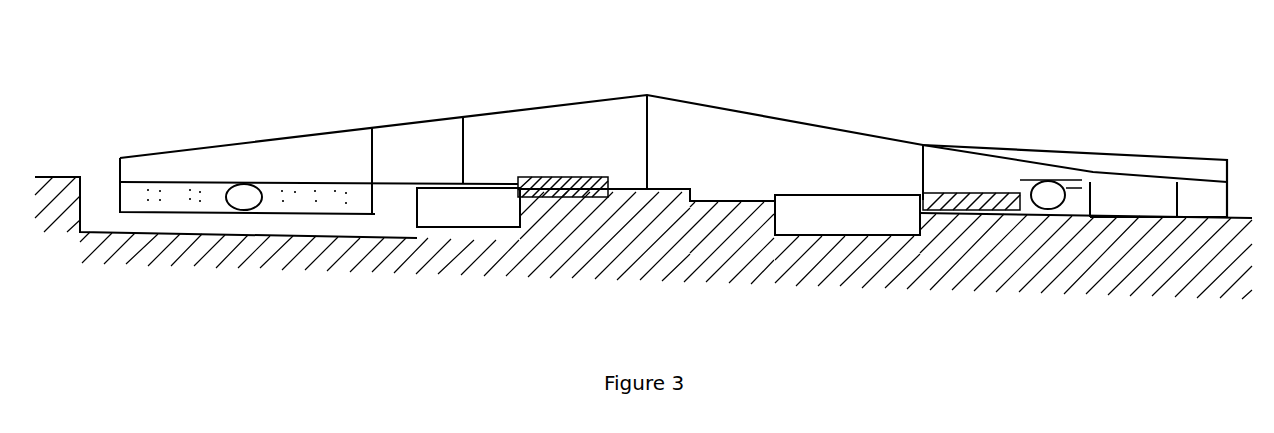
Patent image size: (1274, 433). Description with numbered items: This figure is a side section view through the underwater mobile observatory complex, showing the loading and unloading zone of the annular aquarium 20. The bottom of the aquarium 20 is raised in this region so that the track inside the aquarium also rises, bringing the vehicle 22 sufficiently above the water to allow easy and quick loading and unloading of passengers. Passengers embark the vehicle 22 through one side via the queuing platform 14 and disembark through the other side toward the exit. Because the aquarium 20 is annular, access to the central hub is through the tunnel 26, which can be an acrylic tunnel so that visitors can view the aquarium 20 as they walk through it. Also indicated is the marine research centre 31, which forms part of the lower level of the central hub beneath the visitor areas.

The aquarium 20 is at (238, 132).
The tunnel 26 is at (177, 228).
The queuing platform 14 is at (940, 172).
The vehicle 22 is at (1064, 165).
The marine research centre 31 is at (847, 215).